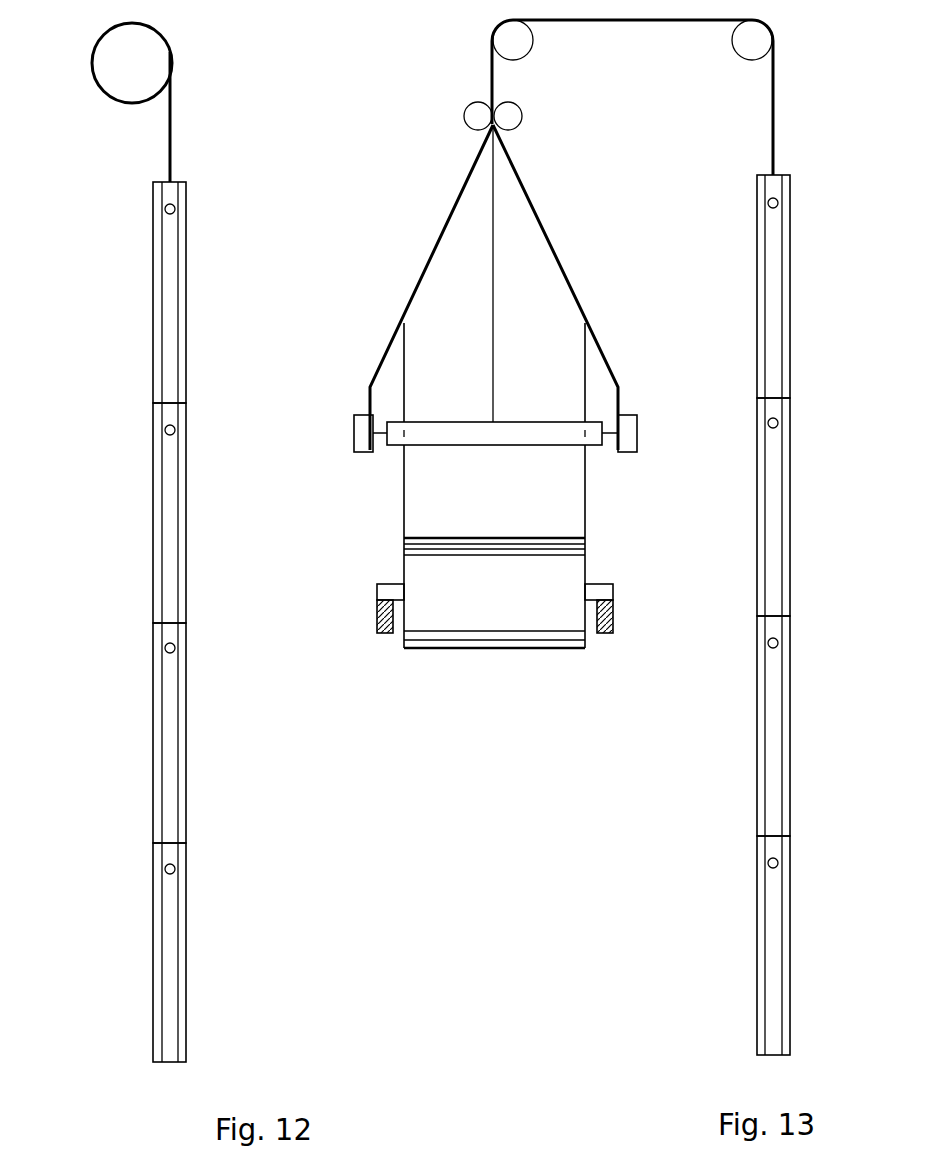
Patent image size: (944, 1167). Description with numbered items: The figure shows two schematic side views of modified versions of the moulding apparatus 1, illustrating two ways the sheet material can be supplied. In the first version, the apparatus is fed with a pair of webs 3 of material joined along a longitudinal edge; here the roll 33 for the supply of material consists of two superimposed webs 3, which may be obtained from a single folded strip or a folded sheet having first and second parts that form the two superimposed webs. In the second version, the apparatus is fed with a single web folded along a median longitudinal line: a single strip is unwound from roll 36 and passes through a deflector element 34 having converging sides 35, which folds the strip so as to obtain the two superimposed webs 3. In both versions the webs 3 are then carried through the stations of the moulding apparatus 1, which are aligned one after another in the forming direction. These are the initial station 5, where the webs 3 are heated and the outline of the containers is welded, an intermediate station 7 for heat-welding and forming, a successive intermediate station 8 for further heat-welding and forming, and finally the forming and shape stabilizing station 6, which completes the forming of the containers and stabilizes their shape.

In FIG. 12, the moulding apparatus 1 is at (195, 622).
In FIG. 13, the moulding apparatus 1 is at (727, 615).
In FIG. 12, the webs 3 is at (168, 135).
In FIG. 13, the webs 3 is at (777, 87).
In FIG. 12, the initial station 5 is at (130, 293).
In FIG. 13, the initial station 5 is at (800, 303).
In FIG. 12, the forming and shape stabilizing station 6 is at (140, 928).
In FIG. 13, the forming and shape stabilizing station 6 is at (810, 963).
In FIG. 12, the intermediate station 7 is at (130, 515).
In FIG. 13, the intermediate station 7 is at (808, 502).
In FIG. 12, the successive intermediate station 8 is at (128, 708).
In FIG. 13, the successive intermediate station 8 is at (808, 745).
In FIG. 12, the roll 33 is at (170, 42).
In FIG. 13, the deflector element 34 is at (573, 150).
In FIG. 13, the converging sides 35 is at (420, 277).
In FIG. 13, the roll 36 is at (483, 620).